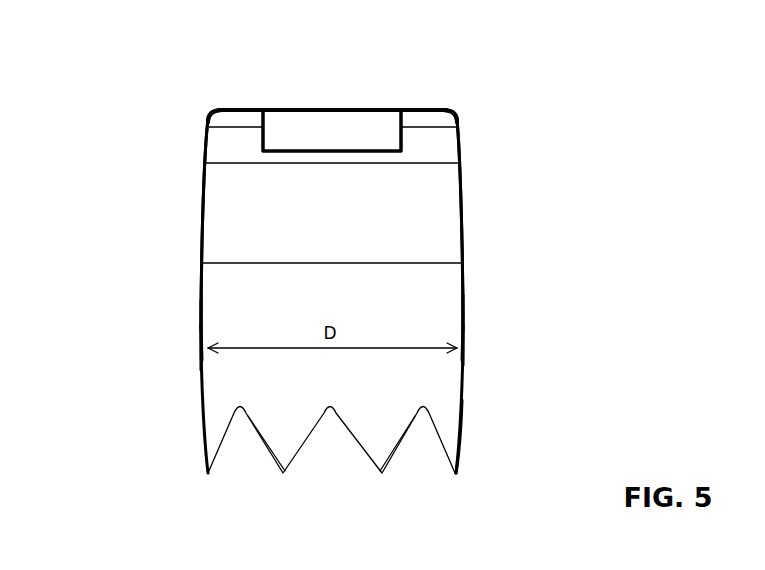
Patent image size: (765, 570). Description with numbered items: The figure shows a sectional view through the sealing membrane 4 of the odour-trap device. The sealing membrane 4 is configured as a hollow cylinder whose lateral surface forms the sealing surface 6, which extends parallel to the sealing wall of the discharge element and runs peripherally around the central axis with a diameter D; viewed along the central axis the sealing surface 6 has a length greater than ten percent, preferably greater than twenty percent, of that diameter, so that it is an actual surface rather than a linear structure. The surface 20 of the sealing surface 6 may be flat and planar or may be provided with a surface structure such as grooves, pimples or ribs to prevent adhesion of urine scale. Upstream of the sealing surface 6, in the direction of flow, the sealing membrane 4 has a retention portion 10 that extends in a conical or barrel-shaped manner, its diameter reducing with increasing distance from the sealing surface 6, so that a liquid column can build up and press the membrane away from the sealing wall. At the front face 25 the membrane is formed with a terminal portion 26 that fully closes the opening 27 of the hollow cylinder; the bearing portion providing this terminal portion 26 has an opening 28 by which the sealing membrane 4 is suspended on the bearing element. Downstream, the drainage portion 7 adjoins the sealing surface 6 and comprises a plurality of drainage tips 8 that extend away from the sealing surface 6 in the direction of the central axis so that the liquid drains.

The sealing membrane 4 is at (462, 247).
The sealing surface 6 is at (202, 337).
The drainage portion 7 is at (458, 442).
The drainage tips 8 is at (208, 473).
The retention portion 10 is at (205, 183).
The surface 20 is at (463, 308).
The front face 25 is at (418, 110).
The terminal portion 26 is at (245, 110).
The opening 27 is at (373, 103).
The opening 28 is at (302, 135).